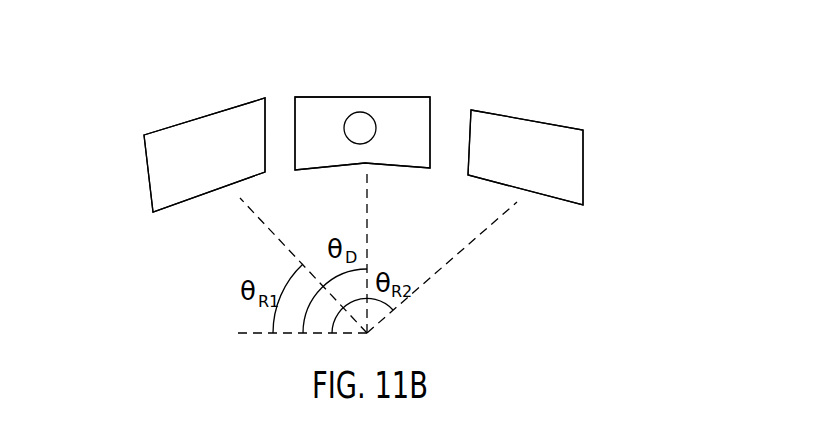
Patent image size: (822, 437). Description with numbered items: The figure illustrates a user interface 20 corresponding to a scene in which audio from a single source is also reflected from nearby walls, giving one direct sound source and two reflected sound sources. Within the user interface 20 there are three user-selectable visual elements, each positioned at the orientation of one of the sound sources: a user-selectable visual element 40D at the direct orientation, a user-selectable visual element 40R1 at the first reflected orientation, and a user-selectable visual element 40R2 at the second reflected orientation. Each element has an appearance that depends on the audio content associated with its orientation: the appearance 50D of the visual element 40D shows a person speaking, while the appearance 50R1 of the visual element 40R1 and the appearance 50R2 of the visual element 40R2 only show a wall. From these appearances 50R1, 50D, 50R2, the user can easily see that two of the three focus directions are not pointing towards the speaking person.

The user interface 20 is at (447, 90).
The user-selectable visual element 40R1 is at (200, 117).
The appearance 50R1 is at (147, 173).
The user-selectable visual element 40D is at (340, 80).
The appearance 50D is at (397, 112).
The user-selectable visual element 40R2 is at (549, 115).
The appearance 50R2 is at (583, 167).